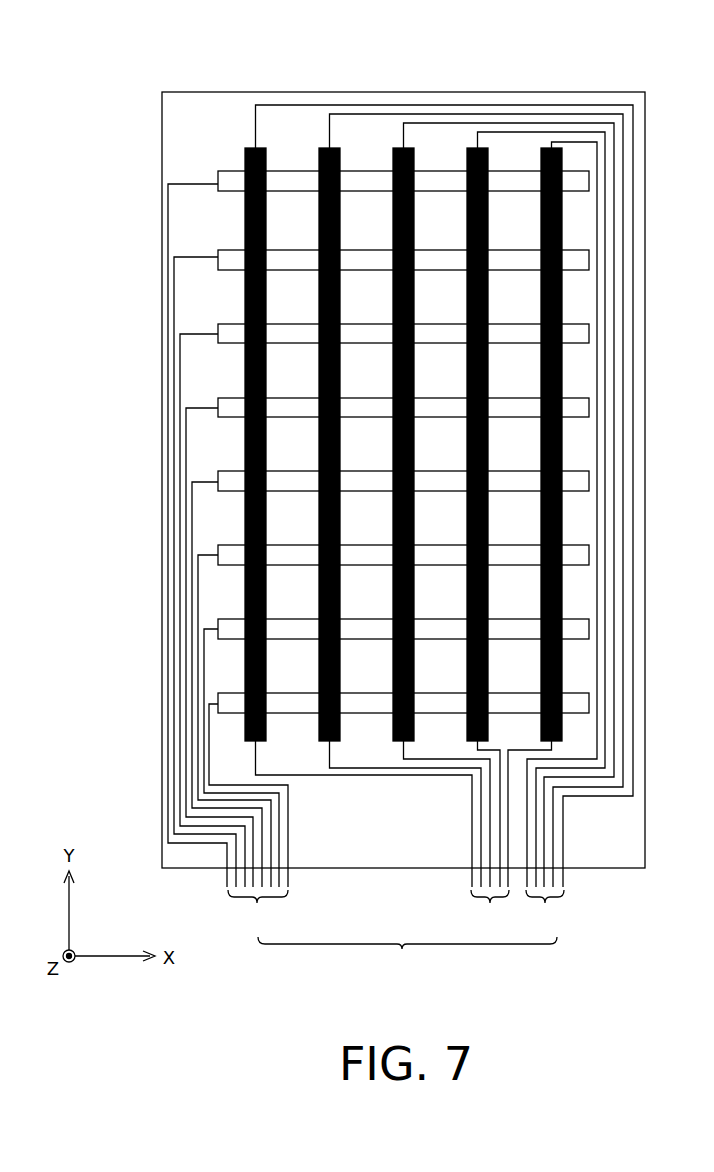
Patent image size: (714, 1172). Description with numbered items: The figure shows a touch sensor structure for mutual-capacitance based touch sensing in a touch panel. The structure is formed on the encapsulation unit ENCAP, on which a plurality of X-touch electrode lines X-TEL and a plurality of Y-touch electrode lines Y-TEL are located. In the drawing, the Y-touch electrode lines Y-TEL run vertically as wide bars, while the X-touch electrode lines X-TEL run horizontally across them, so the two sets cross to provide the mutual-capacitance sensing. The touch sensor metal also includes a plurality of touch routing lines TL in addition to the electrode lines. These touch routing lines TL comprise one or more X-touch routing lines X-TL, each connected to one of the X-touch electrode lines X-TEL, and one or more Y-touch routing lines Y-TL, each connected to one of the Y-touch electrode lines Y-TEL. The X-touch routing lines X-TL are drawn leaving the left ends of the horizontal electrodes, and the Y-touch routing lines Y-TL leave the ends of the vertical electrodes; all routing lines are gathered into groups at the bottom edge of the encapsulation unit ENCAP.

The encapsulation unit ENCAP is at (230, 92).
The X-touch electrode lines X-TEL is at (442, 171).
The Y-touch electrode lines Y-TEL is at (540, 160).
The X-touch routing lines X-TL is at (258, 913).
The Y-touch routing lines Y-TL is at (517, 913).
The touch routing lines TL is at (407, 958).